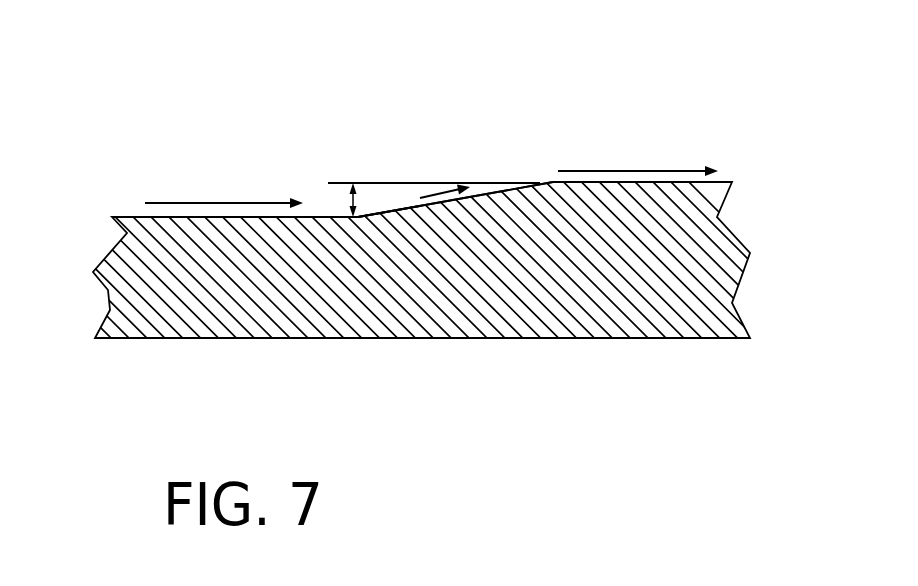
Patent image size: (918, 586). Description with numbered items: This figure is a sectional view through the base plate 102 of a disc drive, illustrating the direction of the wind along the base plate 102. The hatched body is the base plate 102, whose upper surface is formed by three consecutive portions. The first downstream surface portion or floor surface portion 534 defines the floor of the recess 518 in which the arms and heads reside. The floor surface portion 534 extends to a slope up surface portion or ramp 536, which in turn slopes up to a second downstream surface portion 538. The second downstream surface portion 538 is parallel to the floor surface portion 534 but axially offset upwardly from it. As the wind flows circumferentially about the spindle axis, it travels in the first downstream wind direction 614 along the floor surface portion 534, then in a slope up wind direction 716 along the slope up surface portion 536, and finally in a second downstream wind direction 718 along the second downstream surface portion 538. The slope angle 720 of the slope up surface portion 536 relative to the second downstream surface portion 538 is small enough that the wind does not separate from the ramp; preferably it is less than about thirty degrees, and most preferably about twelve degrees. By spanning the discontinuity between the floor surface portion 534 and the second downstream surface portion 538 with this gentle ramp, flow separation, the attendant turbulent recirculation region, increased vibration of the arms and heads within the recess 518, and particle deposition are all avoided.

The base plate 102 is at (530, 442).
The recess 518 is at (259, 114).
The floor surface portion 534 is at (131, 216).
The slope up surface portion 536 is at (403, 208).
The second downstream surface portion 538 is at (720, 178).
The first downstream wind direction 614 is at (230, 202).
The slope up wind direction 716 is at (437, 191).
The second downstream wind direction 718 is at (677, 170).
The slope angle 720 is at (349, 201).